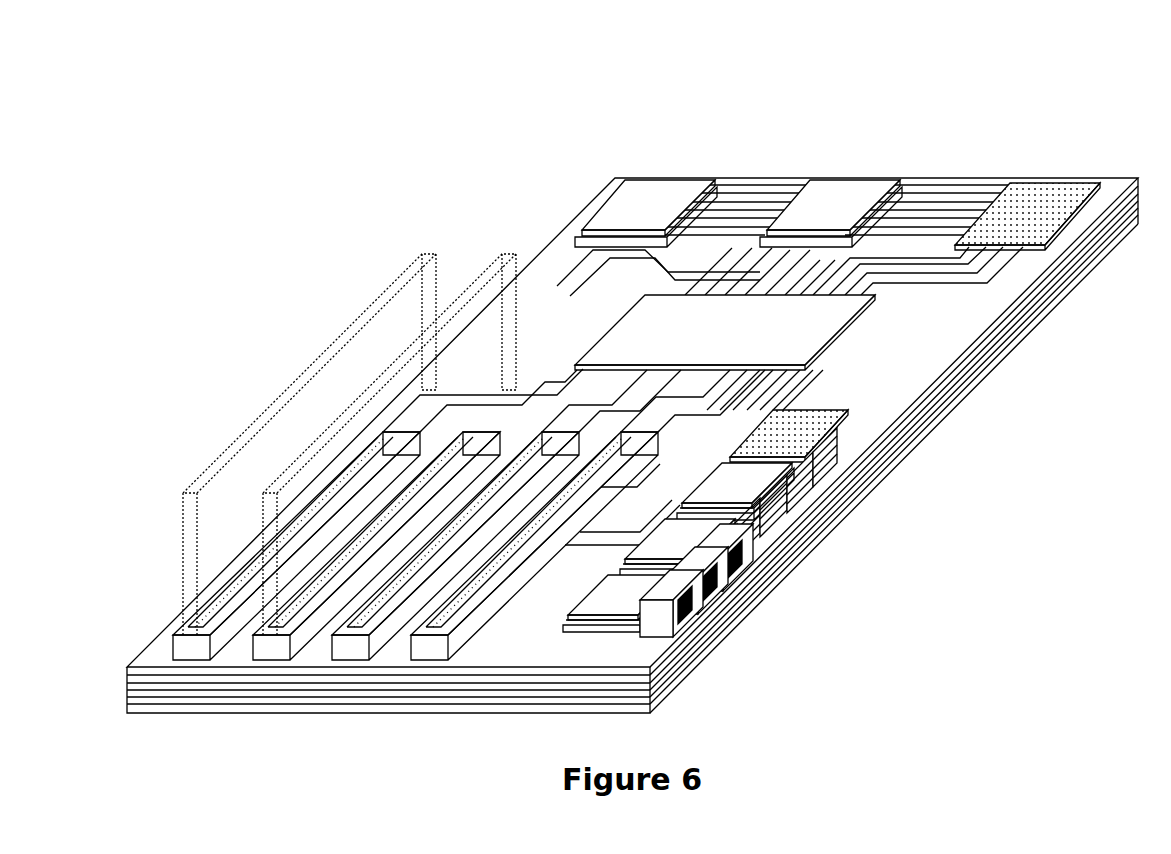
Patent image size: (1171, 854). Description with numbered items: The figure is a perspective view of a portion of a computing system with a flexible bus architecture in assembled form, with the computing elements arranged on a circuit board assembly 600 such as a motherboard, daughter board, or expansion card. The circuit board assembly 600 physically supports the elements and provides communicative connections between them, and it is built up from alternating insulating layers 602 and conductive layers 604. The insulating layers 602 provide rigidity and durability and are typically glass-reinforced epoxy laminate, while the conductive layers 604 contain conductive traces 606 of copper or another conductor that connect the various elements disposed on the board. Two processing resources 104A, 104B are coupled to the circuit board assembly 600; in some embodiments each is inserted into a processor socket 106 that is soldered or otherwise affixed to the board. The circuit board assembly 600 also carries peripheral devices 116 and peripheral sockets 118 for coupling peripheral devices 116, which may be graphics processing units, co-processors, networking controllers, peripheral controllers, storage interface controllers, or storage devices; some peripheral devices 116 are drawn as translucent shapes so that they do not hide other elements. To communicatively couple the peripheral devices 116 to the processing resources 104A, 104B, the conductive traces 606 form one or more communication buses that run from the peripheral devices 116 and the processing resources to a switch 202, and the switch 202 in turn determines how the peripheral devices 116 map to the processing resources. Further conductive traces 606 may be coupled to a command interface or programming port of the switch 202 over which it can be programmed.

The circuit board assembly 600 is at (730, 90).
The insulating layers 602 is at (127, 667).
The conductive layers 604 is at (127, 695).
The conductive traces 606 is at (561, 376).
The processor socket 106 is at (1016, 219).
The processing resource 104A is at (624, 214).
The processing resource 104B is at (809, 214).
The switch 202 is at (709, 339).
The peripheral sockets 118 is at (776, 441).
The peripheral devices 116 is at (721, 493).